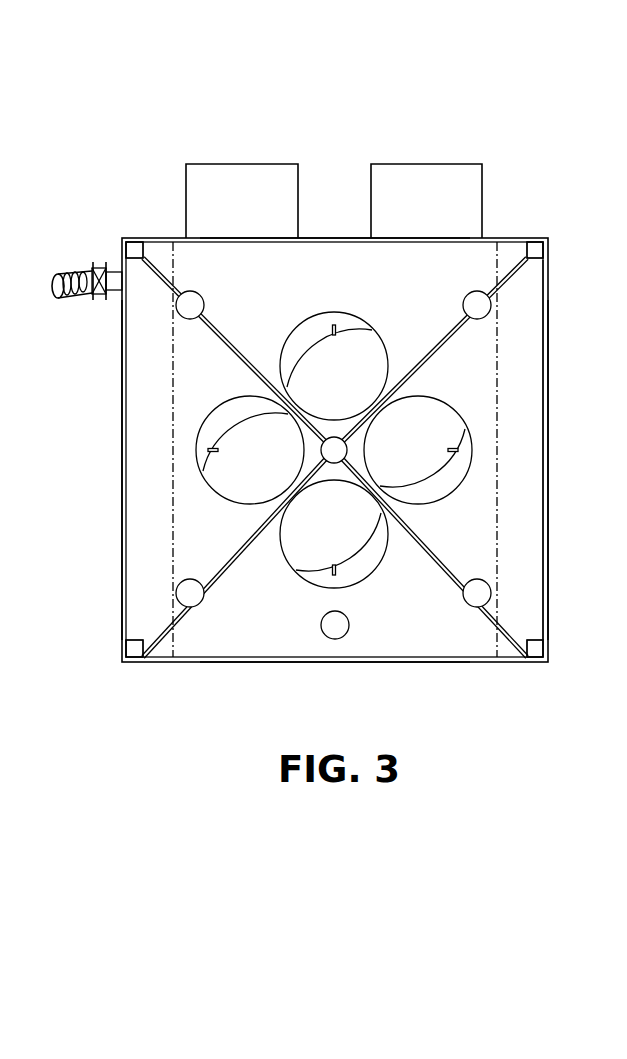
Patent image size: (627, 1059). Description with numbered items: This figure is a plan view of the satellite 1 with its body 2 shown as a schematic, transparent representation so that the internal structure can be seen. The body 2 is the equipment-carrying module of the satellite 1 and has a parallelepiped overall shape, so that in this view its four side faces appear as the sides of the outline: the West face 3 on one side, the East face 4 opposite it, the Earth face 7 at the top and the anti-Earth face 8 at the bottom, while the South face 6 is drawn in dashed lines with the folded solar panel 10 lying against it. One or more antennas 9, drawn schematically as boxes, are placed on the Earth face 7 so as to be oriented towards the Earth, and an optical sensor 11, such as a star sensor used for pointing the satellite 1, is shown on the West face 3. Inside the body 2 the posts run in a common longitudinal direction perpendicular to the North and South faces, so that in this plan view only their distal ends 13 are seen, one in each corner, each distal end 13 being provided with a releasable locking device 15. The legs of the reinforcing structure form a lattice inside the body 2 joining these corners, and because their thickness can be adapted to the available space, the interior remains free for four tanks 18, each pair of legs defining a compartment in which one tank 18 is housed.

The satellite 1 is at (134, 114).
The body 2 is at (556, 514).
The West face 3 is at (121, 510).
The East face 4 is at (549, 360).
The South face 6 is at (529, 295).
The Earth face 7 is at (318, 238).
The anti-Earth face 8 is at (420, 662).
The antennas 9 is at (226, 163).
The solar panels 10 is at (190, 265).
The optical sensors 11 is at (80, 280).
The distal end 13 is at (133, 250).
The releasable locking device 15 is at (334, 449).
The tanks 18 is at (353, 347).